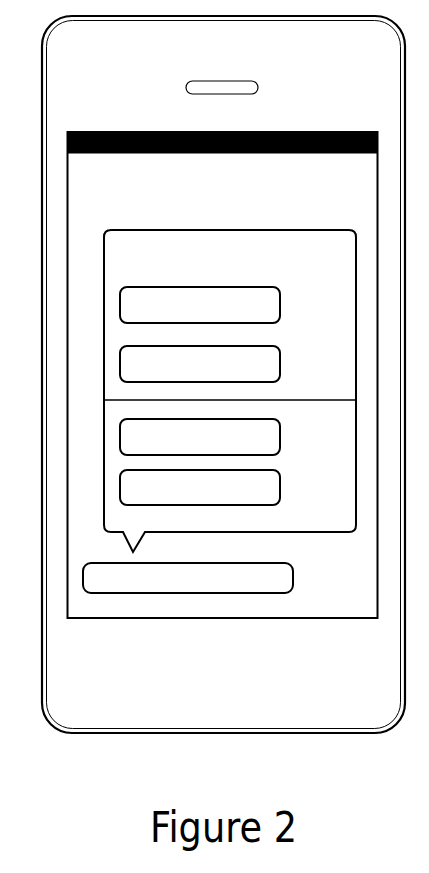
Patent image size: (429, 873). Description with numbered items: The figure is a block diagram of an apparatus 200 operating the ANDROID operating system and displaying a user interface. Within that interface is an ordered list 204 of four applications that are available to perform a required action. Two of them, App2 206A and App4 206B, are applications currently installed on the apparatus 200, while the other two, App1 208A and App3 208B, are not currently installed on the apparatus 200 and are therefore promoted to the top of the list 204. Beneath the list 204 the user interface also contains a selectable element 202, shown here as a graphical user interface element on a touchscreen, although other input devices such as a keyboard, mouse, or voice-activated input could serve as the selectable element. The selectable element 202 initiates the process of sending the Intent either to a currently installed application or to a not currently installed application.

The apparatus 200 is at (223, 374).
The selectable element 202 is at (188, 578).
The ordered list 204 is at (238, 378).
The App2 206A is at (200, 437).
The App4 206B is at (200, 487).
The App1 208A is at (200, 305).
The App3 208B is at (200, 364).